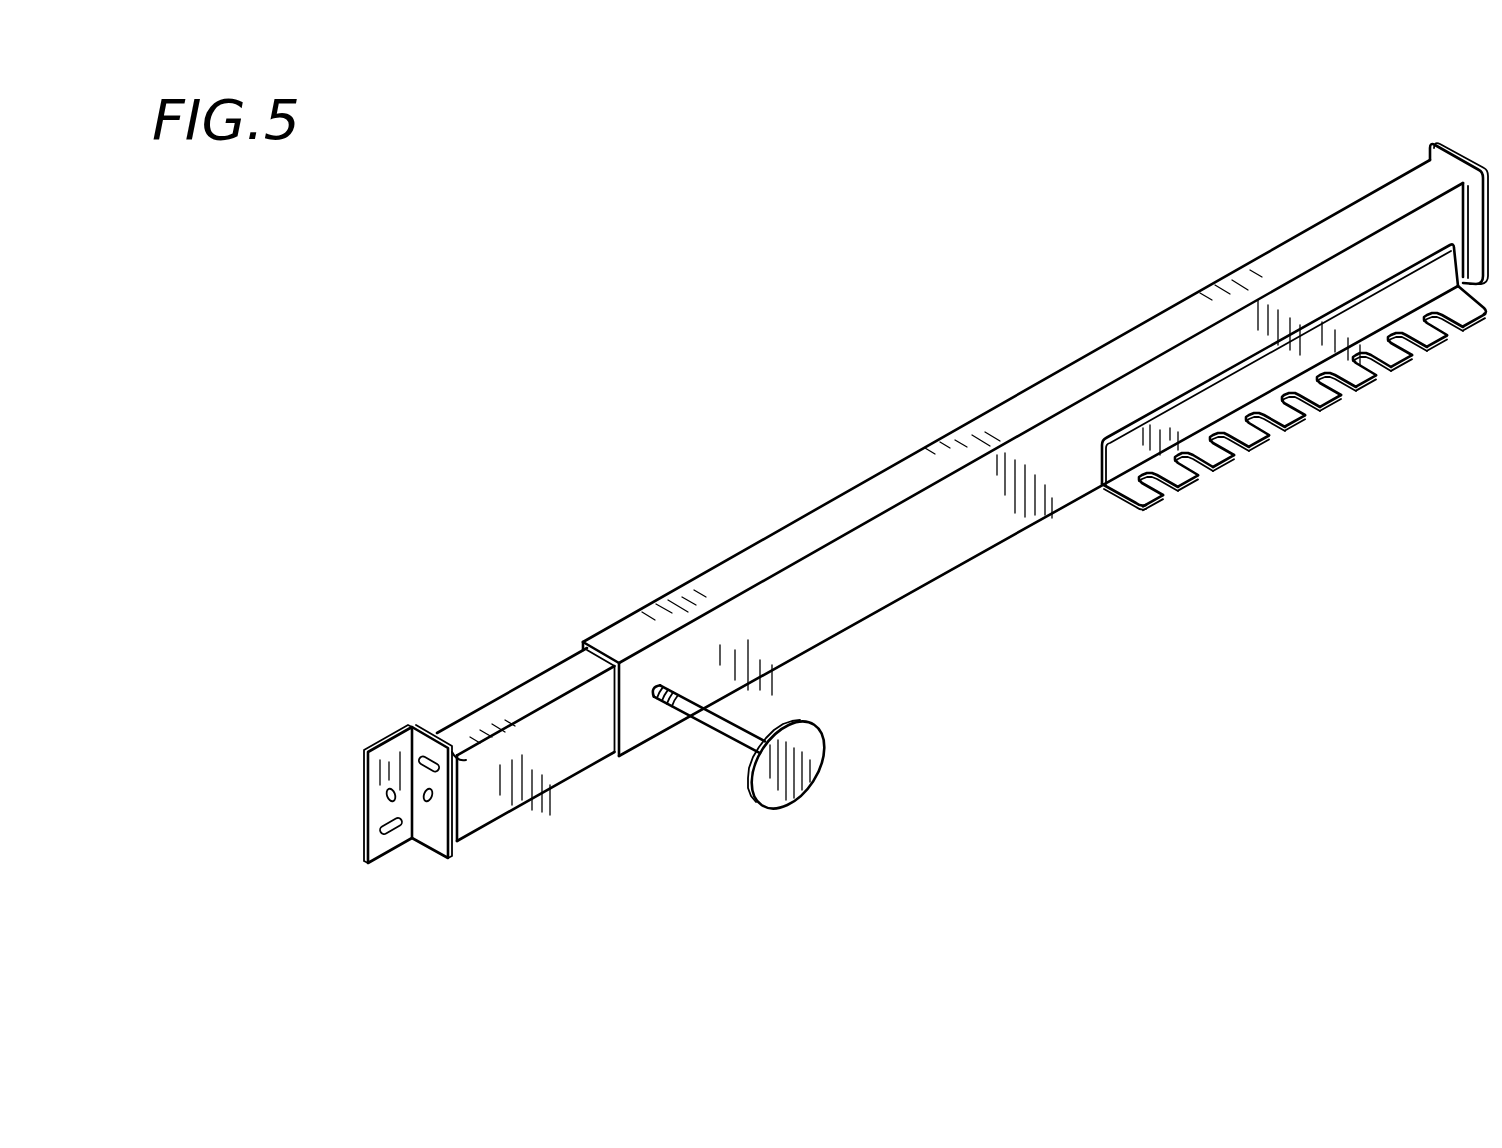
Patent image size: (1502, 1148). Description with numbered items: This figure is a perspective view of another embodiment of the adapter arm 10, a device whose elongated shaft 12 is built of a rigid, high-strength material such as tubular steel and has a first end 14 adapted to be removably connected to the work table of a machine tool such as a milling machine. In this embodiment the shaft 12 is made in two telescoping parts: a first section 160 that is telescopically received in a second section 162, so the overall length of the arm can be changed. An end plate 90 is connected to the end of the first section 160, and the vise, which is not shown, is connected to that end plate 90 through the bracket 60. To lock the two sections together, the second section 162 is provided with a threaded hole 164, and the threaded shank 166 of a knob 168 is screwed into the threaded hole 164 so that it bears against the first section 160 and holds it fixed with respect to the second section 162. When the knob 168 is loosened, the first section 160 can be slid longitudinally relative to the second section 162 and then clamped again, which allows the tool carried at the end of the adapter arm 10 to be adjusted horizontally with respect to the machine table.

The adapter arm 10 is at (1065, 245).
The elongated shaft 12 is at (864, 470).
The first end 14 is at (1307, 210).
The bracket 60 is at (431, 855).
The end plate 90 is at (456, 758).
The first section 160 is at (498, 790).
The second section 162 is at (970, 534).
The threaded hole 164 is at (641, 702).
The threaded shank 166 is at (733, 745).
The knob 168 is at (800, 768).